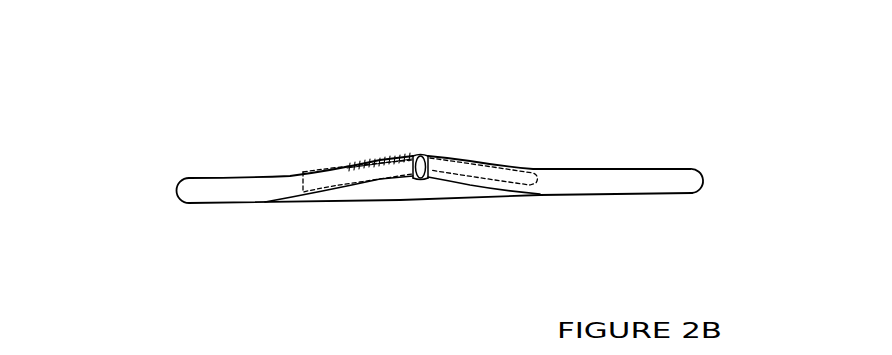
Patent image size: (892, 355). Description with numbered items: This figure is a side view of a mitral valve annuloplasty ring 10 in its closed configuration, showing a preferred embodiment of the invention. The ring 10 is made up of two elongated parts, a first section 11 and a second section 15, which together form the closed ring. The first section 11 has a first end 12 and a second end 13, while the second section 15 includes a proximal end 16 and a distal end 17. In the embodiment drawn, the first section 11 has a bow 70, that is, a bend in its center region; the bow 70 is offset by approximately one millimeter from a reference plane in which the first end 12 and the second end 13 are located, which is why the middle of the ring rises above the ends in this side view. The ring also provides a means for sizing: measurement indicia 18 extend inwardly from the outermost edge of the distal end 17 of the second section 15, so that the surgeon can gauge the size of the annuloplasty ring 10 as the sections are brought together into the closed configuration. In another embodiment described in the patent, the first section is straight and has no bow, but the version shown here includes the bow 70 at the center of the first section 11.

The annuloplasty ring 10 is at (183, 122).
The first section 11 is at (470, 158).
The first end 12 is at (531, 170).
The second end 13 is at (309, 172).
The second section 15 is at (677, 168).
The proximal end 16 is at (450, 173).
The distal end 17 is at (388, 177).
The measurement indicia 18 is at (400, 157).
The bow 70 is at (429, 156).